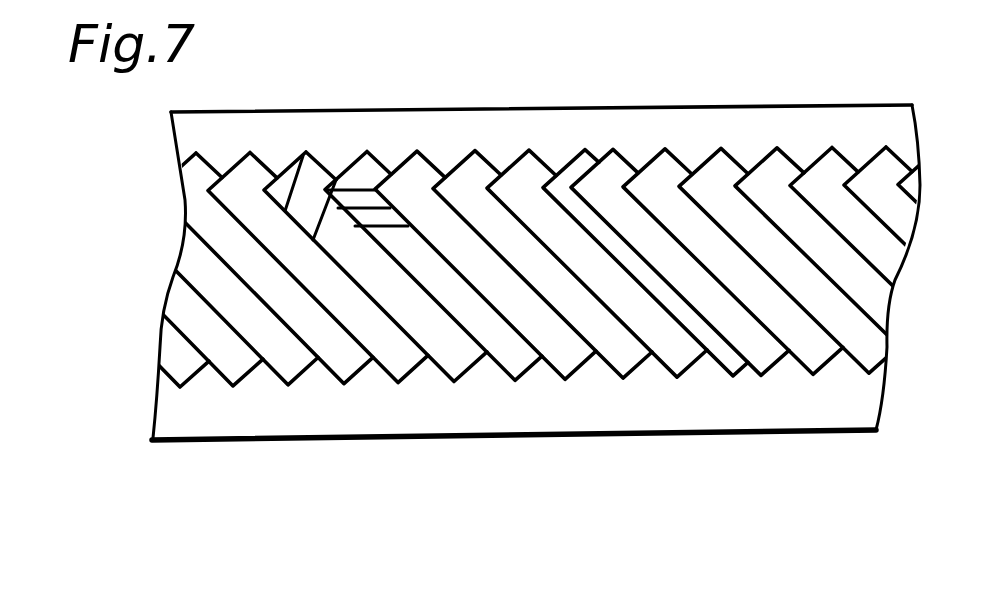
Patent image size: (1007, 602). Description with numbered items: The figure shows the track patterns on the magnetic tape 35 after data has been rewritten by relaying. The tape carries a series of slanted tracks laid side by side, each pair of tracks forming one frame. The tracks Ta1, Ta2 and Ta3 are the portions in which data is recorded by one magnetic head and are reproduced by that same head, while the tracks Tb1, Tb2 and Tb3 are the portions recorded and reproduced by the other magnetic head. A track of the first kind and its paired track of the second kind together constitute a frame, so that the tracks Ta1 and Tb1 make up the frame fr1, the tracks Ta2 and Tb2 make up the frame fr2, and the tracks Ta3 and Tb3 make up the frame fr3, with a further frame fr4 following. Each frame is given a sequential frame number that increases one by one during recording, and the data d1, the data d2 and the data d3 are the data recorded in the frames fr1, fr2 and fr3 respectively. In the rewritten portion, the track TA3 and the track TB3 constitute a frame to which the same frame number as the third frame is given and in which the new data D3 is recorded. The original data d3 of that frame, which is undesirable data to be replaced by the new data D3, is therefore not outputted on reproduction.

The magnetic tape 35 is at (225, 422).
The track Ta1 is at (462, 367).
The track Tb1 is at (512, 365).
The track Ta2 is at (582, 380).
The track Tb2 is at (638, 375).
The track Ta3 is at (680, 355).
The track Tb3 is at (732, 357).
The track TA3 is at (762, 350).
The track TB3 is at (823, 353).
The frame fr1 is at (403, 335).
The frame fr2 is at (517, 334).
The frame fr3 is at (637, 334).
The frame fr4 is at (743, 333).
The data d1 is at (448, 321).
The data d2 is at (559, 321).
The data d3 is at (657, 320).
The new data D3 is at (751, 321).